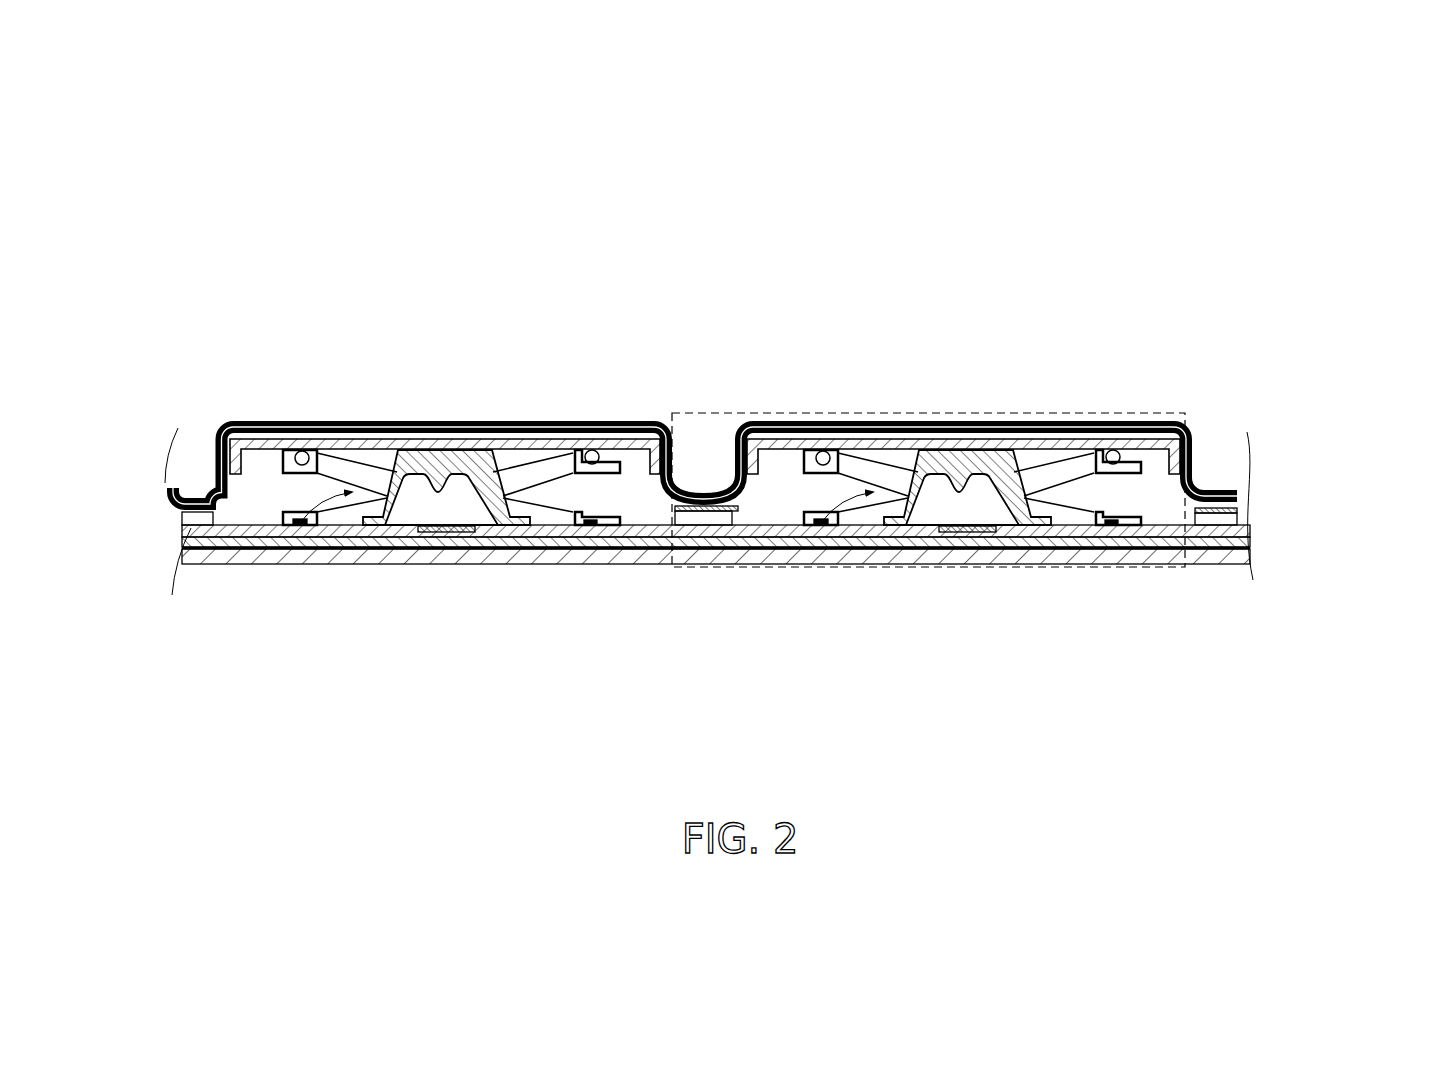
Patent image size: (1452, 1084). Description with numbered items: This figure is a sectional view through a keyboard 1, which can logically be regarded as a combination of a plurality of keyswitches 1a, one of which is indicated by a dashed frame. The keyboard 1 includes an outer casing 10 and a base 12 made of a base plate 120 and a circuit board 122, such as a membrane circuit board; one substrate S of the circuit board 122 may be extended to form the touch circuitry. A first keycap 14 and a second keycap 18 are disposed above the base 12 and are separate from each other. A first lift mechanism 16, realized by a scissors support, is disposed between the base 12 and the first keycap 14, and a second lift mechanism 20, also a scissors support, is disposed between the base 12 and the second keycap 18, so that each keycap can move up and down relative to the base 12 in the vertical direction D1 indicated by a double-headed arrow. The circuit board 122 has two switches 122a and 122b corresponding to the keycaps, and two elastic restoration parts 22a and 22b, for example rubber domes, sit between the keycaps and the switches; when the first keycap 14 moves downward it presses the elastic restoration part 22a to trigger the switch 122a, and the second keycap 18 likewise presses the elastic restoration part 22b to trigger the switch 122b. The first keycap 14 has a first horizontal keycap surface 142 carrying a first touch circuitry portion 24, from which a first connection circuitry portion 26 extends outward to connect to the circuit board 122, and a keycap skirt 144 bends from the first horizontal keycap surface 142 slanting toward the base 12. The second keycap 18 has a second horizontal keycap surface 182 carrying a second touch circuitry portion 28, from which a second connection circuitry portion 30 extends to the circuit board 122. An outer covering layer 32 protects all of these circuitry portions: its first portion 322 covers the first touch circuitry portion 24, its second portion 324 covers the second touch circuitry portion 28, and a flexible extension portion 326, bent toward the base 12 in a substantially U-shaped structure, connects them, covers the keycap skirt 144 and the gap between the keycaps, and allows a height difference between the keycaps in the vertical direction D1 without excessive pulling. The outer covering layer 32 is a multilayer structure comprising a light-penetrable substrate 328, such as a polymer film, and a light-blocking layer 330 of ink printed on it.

The keyboard 1 is at (262, 203).
The keyswitch 1a is at (962, 574).
The outer casing 10 is at (613, 562).
The base 12 is at (716, 614).
The base plate 120 is at (1098, 540).
The circuit board 122 is at (1026, 527).
The switch 122a is at (905, 527).
The switch 122b is at (383, 527).
The first keycap 14 is at (705, 497).
The first horizontal keycap surface 142 is at (1058, 431).
The keycap skirt 144 is at (733, 458).
The first lift mechanism 16 is at (785, 452).
The second keycap 18 is at (568, 458).
The second horizontal keycap surface 182 is at (527, 433).
The second lift mechanism 20 is at (291, 526).
The elastic restoration part 22a is at (983, 483).
The elastic restoration part 22b is at (462, 480).
The first touch circuitry portion 24 is at (748, 525).
The first connection circuitry portion 26 is at (711, 511).
The second touch circuitry portion 28 is at (272, 450).
The second connection circuitry portion 30 is at (182, 507).
The outer covering layer 32 is at (700, 419).
The first portion 322 is at (970, 359).
The second portion 324 is at (655, 383).
The extension portion 326 is at (755, 383).
The light-penetrable substrate 328 is at (1190, 448).
The light-blocking layer 330 is at (1197, 446).
The substrate S is at (651, 568).
The vertical direction D1 is at (1355, 447).